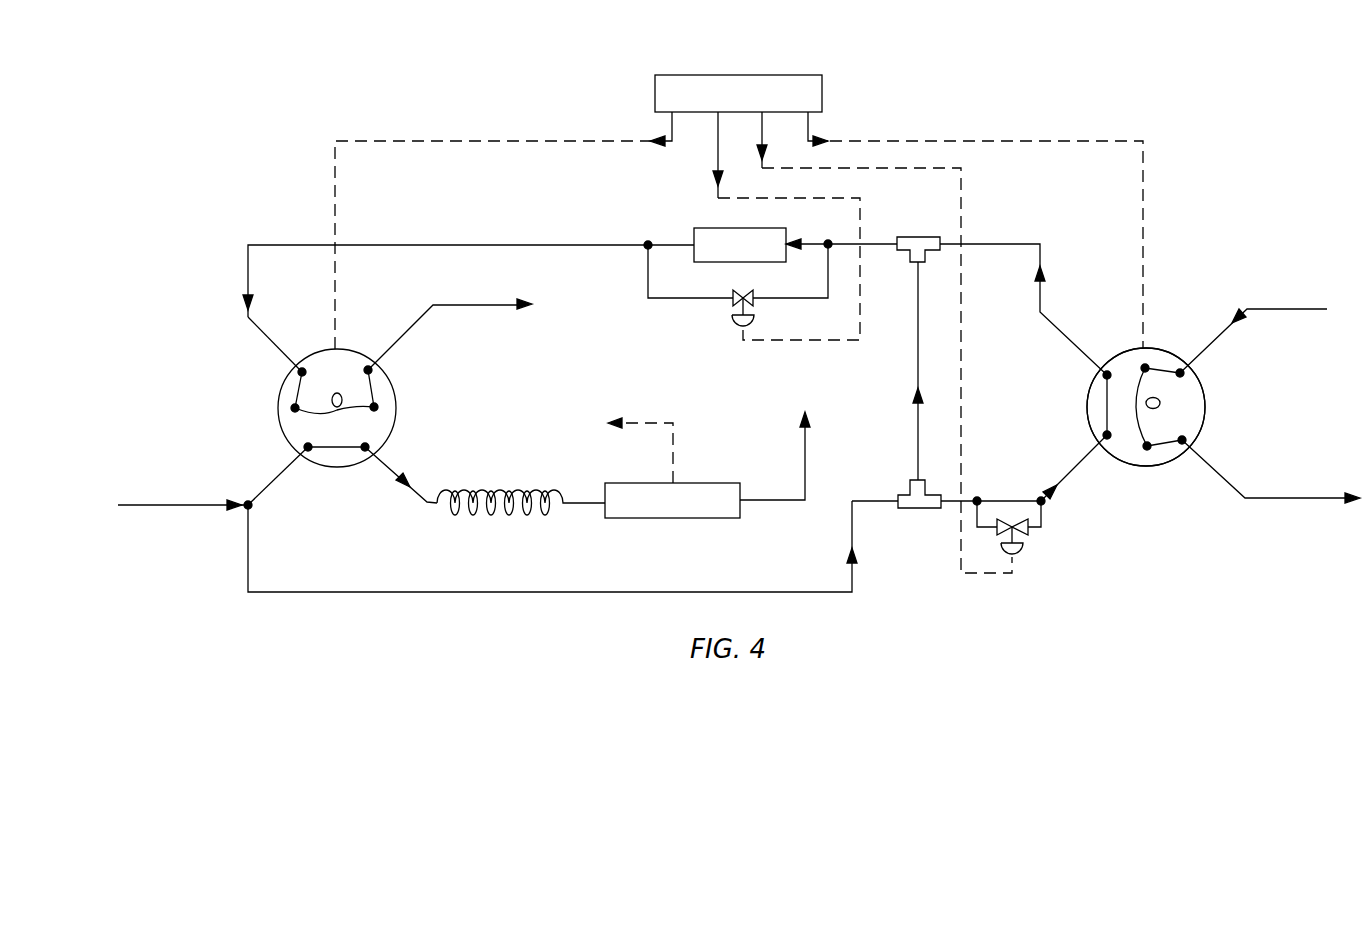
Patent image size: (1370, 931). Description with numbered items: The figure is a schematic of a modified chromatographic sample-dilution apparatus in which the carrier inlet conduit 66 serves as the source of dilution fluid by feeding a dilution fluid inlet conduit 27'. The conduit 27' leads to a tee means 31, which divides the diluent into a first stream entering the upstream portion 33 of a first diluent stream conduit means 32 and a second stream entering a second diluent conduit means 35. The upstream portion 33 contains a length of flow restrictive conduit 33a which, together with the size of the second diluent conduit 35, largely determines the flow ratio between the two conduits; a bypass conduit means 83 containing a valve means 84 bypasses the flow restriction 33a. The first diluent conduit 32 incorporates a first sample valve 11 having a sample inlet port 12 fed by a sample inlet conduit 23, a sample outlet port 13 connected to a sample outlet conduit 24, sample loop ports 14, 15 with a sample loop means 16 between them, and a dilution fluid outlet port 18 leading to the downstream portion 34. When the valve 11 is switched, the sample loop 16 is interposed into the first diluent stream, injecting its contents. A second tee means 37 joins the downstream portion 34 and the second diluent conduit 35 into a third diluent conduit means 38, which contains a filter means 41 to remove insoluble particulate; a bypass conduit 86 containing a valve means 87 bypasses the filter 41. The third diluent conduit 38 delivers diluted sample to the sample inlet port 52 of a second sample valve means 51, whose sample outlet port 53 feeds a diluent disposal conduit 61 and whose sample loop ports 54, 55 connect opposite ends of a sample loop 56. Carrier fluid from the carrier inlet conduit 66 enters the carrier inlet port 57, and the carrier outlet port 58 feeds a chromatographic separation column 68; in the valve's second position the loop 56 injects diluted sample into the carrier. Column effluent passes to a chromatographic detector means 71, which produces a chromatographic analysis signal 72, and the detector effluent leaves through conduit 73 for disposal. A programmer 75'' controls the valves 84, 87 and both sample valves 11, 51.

The programmer 75'' is at (739, 322).
The filter means 41 is at (694, 230).
The third diluent conduit means 38 is at (486, 245).
The bypass conduit 86 is at (648, 279).
The valve means 87 is at (736, 291).
The second tee means 37 is at (907, 237).
The downstream portion of the first diluent conduit 34 is at (1040, 284).
The second diluent conduit means 35 is at (918, 372).
The tee means 31 is at (898, 497).
The flow restrictive conduit 33a is at (1015, 499).
The bypass conduit means 83 is at (1044, 513).
The valve means 84 is at (1030, 542).
The upstream portion of the first diluent conduit 33 is at (1072, 470).
The first diluent stream conduit means 32 is at (1058, 423).
The first sample valve 11 is at (1125, 350).
The dilution fluid outlet port 18 is at (1102, 376).
The sample loop port 14 is at (1150, 362).
The sample inlet port 12 is at (1197, 372).
The sample loop means 16 is at (1148, 413).
The sample outlet port 13 is at (1197, 440).
The sample loop port 15 is at (1148, 452).
The sample inlet conduit 23 is at (1260, 309).
The sample outlet conduit 24 is at (1276, 498).
The second sample valve means 51 is at (325, 349).
The sample inlet port 52 is at (296, 372).
The sample outlet port 53 is at (374, 371).
The sample loop port 54 is at (290, 408).
The sample loop port 55 is at (380, 407).
The sample loop 56 is at (347, 405).
The carrier inlet port 57 is at (302, 447).
The carrier outlet port 58 is at (372, 447).
The diluent disposal conduit 61 is at (462, 305).
The carrier inlet conduit 66 is at (262, 490).
The dilution fluid inlet conduit 27' is at (552, 546).
The chromatographic separation column 68 is at (503, 492).
The chromatographic detector means 71 is at (700, 483).
The chromatographic analysis signal 72 is at (645, 423).
The detector effluent conduit 73 is at (812, 437).